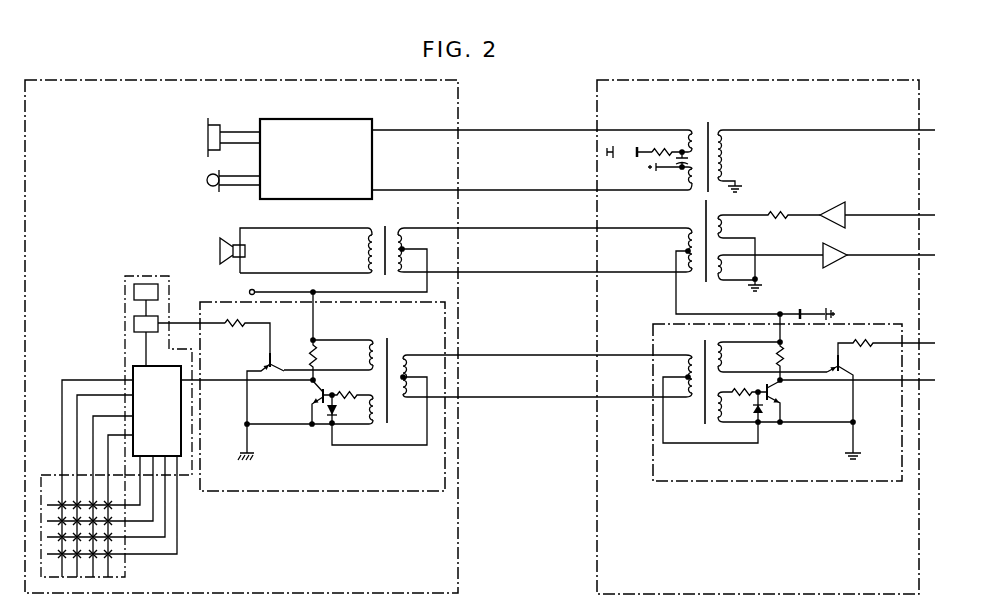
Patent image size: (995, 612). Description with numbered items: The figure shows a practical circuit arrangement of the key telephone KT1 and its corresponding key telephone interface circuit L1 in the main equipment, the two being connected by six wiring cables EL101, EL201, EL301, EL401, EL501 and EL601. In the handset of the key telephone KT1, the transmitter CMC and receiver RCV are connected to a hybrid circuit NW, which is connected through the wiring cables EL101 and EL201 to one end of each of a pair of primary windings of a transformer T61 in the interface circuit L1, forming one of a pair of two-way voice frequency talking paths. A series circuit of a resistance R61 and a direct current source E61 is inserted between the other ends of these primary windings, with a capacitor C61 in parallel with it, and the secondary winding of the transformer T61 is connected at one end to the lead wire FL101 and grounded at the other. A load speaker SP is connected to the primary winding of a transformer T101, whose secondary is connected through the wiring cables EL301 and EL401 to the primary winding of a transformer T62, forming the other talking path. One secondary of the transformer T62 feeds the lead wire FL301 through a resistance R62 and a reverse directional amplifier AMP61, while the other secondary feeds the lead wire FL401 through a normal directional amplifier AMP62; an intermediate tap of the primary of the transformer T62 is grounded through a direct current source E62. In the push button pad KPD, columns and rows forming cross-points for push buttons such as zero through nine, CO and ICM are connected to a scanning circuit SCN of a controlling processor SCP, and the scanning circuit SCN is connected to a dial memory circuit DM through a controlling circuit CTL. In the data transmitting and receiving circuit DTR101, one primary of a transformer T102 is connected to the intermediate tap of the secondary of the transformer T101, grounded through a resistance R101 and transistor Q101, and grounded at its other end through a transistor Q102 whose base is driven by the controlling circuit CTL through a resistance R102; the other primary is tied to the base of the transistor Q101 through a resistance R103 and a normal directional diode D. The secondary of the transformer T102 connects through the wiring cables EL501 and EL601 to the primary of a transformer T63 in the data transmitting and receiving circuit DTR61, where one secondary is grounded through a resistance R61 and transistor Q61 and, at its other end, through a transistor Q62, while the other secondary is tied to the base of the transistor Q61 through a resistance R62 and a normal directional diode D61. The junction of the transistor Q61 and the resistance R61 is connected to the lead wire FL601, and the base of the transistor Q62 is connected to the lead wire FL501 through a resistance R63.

The key telephone KT1 is at (241, 336).
The key telephone interface circuit L1 is at (758, 337).
The receiver RCV is at (215, 137).
The transmitter CMC is at (215, 181).
The hybrid circuit NW is at (316, 159).
The load speaker SP is at (288, 245).
The transformer T101 is at (339, 252).
The transformer T102 is at (379, 385).
The wiring cable EL101 is at (532, 124).
The wiring cable EL201 is at (532, 182).
The wiring cable EL301 is at (545, 222).
The wiring cable EL401 is at (545, 263).
The wiring cable EL501 is at (547, 348).
The wiring cable EL601 is at (547, 388).
The controlling processor SCP is at (156, 364).
The dial memory circuit DM is at (124, 300).
The controlling circuit CTL is at (148, 341).
The scanning circuit SCN is at (180, 471).
The push button pad KPD is at (104, 527).
The push button ICM is at (60, 505).
The push button CO is at (60, 521).
The data transmitting and receiving circuit DTR101 is at (325, 396).
The resistance R101 is at (328, 337).
The resistance R102 is at (242, 328).
The resistance R103 is at (354, 399).
The transistor Q101 is at (289, 403).
The transistor Q102 is at (257, 401).
The normal directional diode D is at (342, 419).
The direct current source E61 is at (636, 145).
The resistance R61 is at (732, 257).
The capacitor C61 is at (668, 169).
The transformer T61 is at (712, 148).
The transformer T62 is at (728, 256).
The transformer T63 is at (758, 378).
The resistance R62 is at (769, 295).
The resistance R63 is at (866, 338).
The reverse directional amplifier AMP61 is at (850, 206).
The normal directional amplifier AMP62 is at (804, 253).
The direct current source E62 is at (799, 311).
The data transmitting and receiving circuit DTR61 is at (777, 402).
The transistor Q61 is at (790, 402).
The transistor Q62 is at (852, 405).
The normal directional diode D61 is at (753, 412).
The lead wire FL101 is at (849, 130).
The lead wire FL301 is at (912, 214).
The lead wire FL401 is at (913, 255).
The lead wire FL501 is at (932, 343).
The lead wire FL601 is at (879, 380).